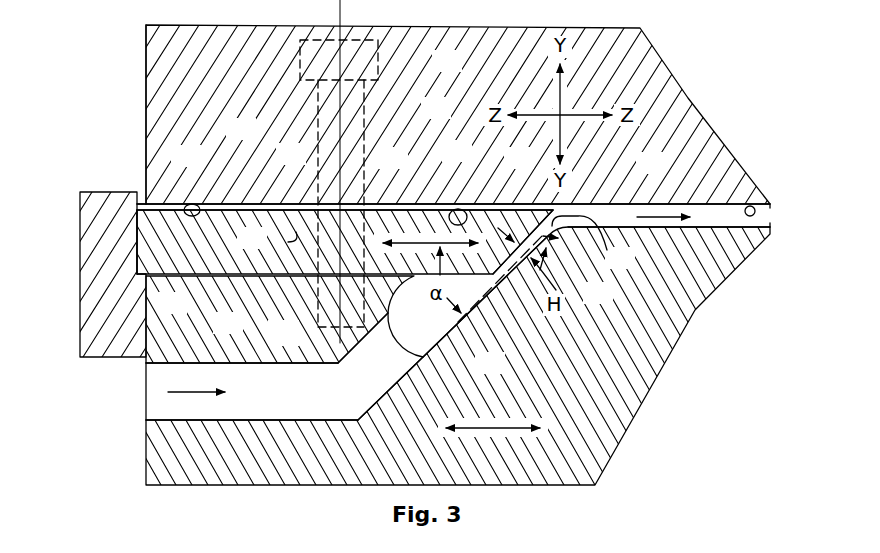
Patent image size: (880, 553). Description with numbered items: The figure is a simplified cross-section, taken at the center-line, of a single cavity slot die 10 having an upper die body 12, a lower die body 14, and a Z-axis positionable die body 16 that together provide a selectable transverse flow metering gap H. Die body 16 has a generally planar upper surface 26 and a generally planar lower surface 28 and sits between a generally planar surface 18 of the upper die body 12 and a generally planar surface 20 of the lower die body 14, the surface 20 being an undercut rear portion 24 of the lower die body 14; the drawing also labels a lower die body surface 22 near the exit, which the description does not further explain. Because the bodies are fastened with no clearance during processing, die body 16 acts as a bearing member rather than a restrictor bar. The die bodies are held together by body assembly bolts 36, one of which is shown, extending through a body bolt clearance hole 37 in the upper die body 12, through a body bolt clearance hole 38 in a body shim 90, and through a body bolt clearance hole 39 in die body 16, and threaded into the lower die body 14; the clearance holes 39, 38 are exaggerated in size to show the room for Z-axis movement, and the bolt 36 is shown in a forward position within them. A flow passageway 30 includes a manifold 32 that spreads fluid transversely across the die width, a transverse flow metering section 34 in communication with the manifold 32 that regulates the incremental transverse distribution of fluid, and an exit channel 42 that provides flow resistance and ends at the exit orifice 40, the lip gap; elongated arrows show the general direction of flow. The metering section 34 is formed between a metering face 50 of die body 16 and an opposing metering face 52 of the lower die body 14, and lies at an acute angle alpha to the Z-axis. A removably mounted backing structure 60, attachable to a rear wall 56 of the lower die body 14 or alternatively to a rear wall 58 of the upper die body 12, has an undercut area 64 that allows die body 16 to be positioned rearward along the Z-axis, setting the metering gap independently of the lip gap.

The slot die 10 is at (144, 50).
The upper die body 12 is at (690, 100).
The lower die body 14 is at (650, 403).
The die body 16 is at (404, 217).
The generally planar surface 18 is at (466, 212).
The generally planar surface 20 is at (193, 290).
The lower block top surface 22 is at (740, 228).
The undercut rear portion 24 is at (297, 343).
The upper surface 26 is at (200, 212).
The lower surface 28 is at (212, 275).
The flow passageway 30 is at (286, 414).
The manifold 32 is at (432, 333).
The transverse flow metering section 34 is at (556, 235).
The body assembly bolt 36 is at (378, 52).
The body bolt clearance hole 37 is at (363, 104).
The body bolt clearance hole 38 is at (306, 195).
The body bolt clearance hole 39 is at (288, 242).
The exit orifice 40 is at (770, 218).
The exit channel 42 is at (613, 204).
The metering face 50 is at (531, 213).
The metering face 52 is at (592, 242).
The rear wall 56 is at (146, 330).
The rear wall 58 is at (145, 130).
The backing structure 60 is at (78, 259).
The undercut area 64 is at (145, 240).
The body shim 90 is at (242, 203).